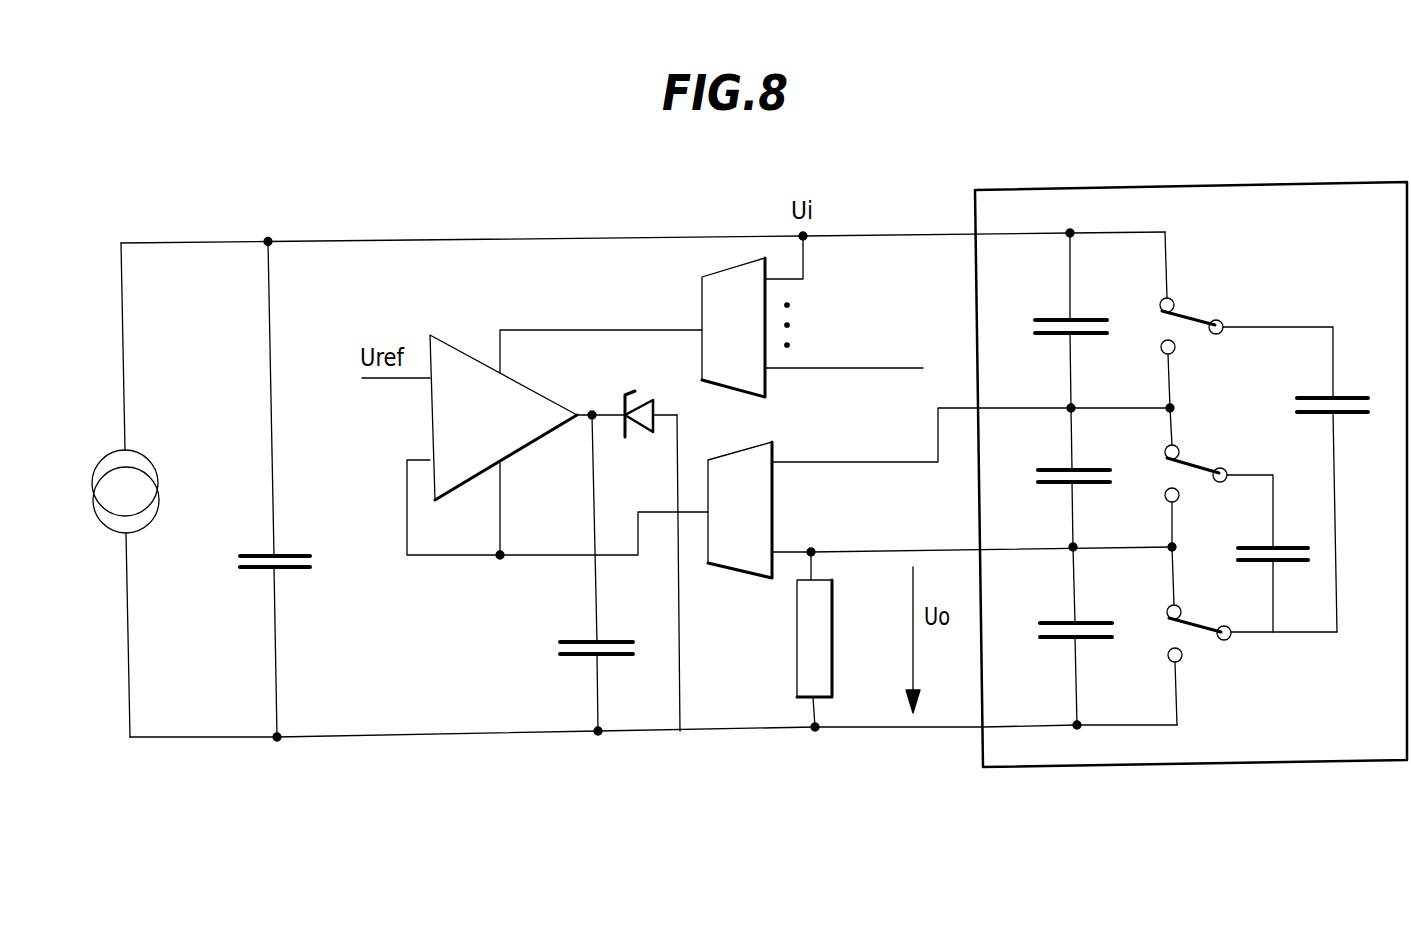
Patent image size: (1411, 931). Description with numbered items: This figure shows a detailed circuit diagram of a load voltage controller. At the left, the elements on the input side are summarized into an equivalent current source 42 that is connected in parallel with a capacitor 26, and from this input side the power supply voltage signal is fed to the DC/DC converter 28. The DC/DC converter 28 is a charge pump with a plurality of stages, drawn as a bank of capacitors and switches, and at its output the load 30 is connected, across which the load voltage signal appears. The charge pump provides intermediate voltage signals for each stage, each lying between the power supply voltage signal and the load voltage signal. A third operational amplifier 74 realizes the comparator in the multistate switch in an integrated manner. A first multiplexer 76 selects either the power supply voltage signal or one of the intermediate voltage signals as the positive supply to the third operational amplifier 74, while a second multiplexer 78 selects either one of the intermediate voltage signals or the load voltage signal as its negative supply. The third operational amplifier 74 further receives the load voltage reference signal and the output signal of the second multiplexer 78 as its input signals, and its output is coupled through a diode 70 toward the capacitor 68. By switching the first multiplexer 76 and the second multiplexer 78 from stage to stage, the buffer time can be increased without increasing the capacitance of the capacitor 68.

The equivalent current source 42 is at (150, 456).
The capacitor 26 is at (254, 556).
The third operational amplifier 74 is at (532, 390).
The diode 70 is at (647, 392).
The first multiplexer 76 is at (743, 392).
The second multiplexer 78 is at (746, 578).
The capacitor 68 is at (569, 642).
The load 30 is at (832, 629).
The DC/DC converter 28 is at (1362, 182).